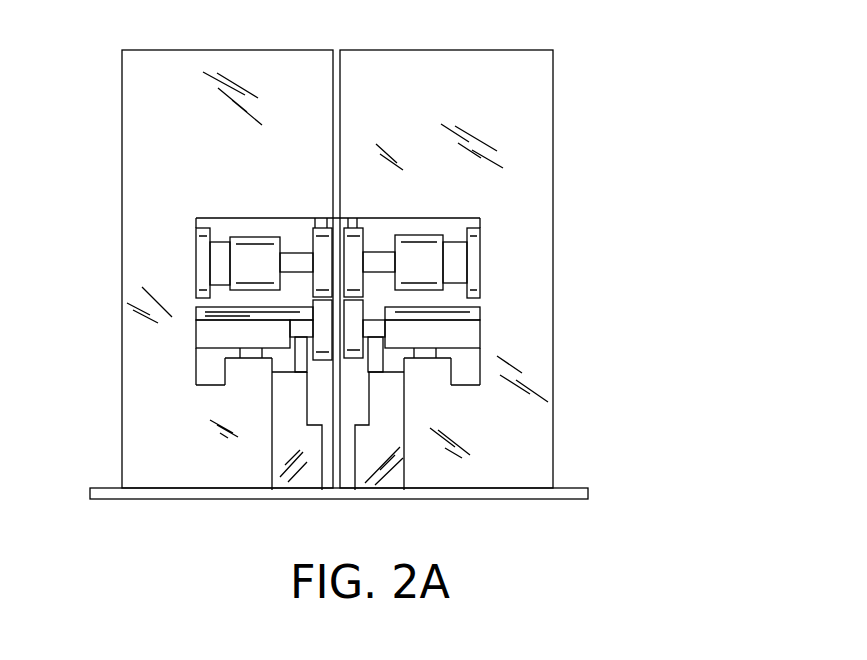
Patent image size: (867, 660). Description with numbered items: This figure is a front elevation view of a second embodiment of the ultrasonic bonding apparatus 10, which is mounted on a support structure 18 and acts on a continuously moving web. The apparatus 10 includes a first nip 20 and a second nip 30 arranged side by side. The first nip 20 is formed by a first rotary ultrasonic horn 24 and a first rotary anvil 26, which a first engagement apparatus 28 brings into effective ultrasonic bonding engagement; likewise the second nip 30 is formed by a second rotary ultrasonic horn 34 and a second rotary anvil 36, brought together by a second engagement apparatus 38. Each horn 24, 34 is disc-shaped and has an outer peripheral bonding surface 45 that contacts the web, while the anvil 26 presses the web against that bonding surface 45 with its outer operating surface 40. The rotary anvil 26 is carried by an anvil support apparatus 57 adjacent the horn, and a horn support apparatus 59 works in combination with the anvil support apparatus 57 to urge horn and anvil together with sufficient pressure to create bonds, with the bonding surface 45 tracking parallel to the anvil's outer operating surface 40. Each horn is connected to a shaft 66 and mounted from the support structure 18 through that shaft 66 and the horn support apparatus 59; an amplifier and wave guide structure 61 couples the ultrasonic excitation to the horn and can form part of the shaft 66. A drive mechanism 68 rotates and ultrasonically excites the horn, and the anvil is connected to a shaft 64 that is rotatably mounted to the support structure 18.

The bonding apparatus 10 is at (636, 100).
The support structure 18 is at (122, 80).
The first nip 20 is at (312, 306).
The first rotary ultrasonic horn 24 is at (310, 230).
The first rotary anvil 26 is at (313, 362).
The first engagement apparatus 28 is at (288, 362).
The second nip 30 is at (363, 300).
The second rotary ultrasonic horn 34 is at (367, 237).
The second rotary anvil 36 is at (371, 373).
The second engagement apparatus 38 is at (426, 357).
The outer operating surface 40 is at (315, 323).
The outer peripheral bonding surface 45 is at (352, 263).
The anvil support apparatus 57 is at (416, 350).
The horn support apparatus 59 is at (353, 220).
The amplifier and wave guide structure 61 is at (437, 233).
The shaft 64 is at (346, 360).
The shaft 66 is at (292, 252).
The drive mechanism 68 is at (205, 262).